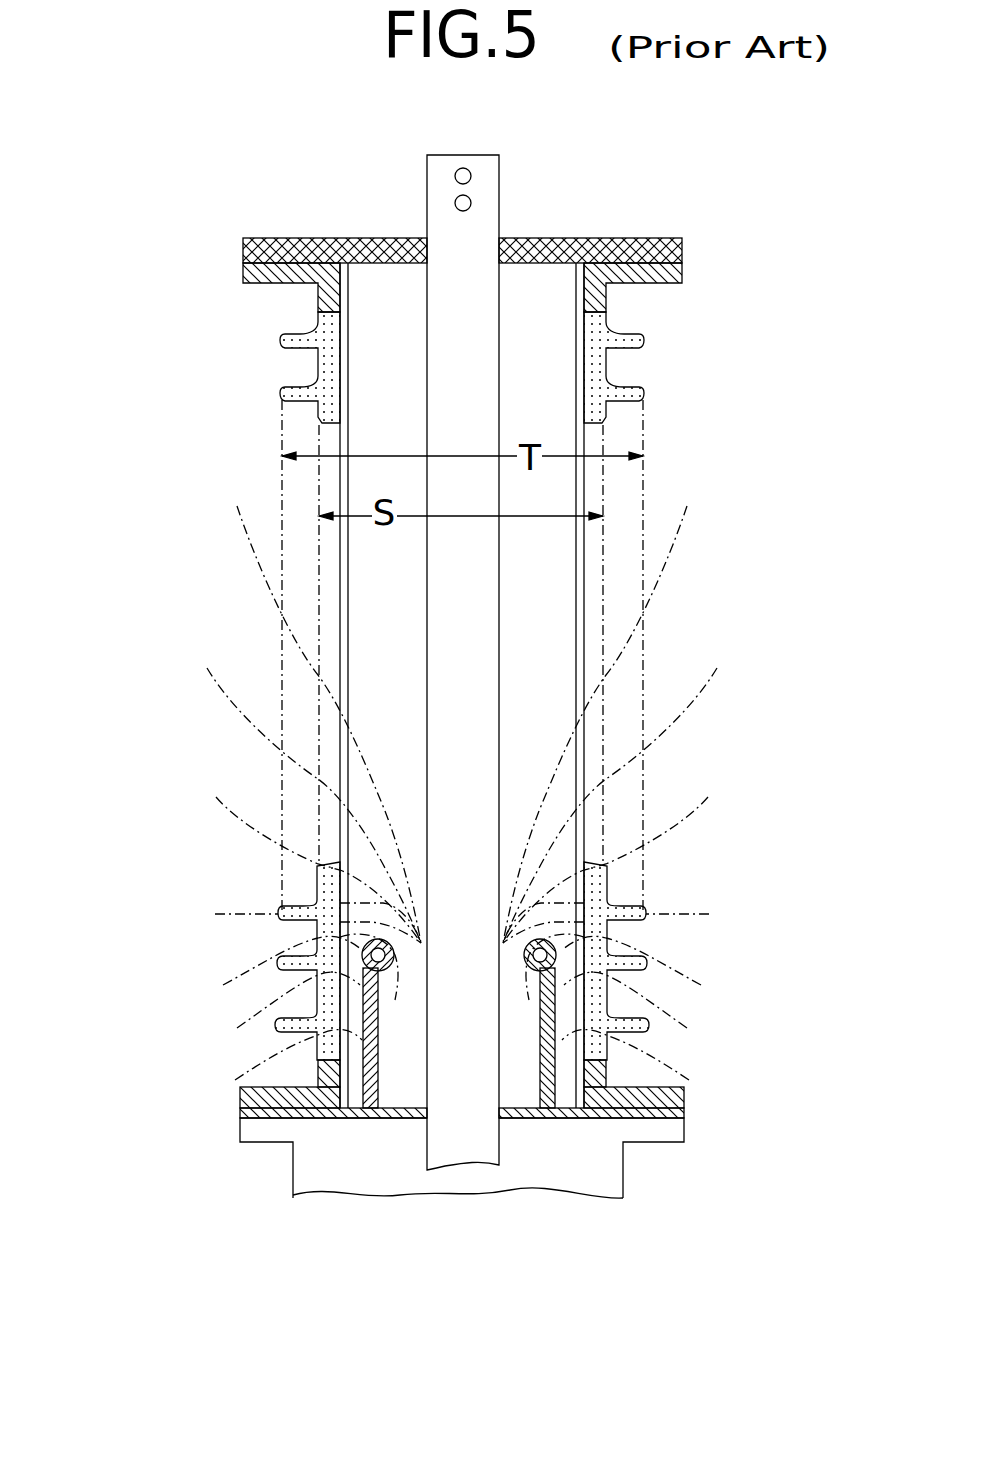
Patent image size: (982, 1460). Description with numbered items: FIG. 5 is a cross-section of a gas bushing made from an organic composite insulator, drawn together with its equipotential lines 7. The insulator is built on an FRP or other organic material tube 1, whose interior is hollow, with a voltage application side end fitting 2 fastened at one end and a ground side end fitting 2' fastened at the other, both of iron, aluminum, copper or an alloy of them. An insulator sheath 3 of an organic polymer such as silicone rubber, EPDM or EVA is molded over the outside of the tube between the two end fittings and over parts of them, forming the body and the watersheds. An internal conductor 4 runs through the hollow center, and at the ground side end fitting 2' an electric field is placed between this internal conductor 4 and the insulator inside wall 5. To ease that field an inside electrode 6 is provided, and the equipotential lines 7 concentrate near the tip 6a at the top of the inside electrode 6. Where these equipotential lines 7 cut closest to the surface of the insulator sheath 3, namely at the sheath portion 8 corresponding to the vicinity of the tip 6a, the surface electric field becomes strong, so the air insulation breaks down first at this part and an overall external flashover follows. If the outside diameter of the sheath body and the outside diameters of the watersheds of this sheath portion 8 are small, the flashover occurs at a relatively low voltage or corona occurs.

The organic material tube 1 is at (572, 303).
The voltage application side end fitting 2 is at (411, 265).
The ground side end fitting 2' is at (401, 1142).
The insulator sheath 3 is at (643, 340).
The internal conductor 4 is at (423, 1142).
The insulator inside wall 5 is at (578, 1057).
The inside electrode 6 is at (326, 1115).
The tip of the top of the inside electrode 6a is at (364, 948).
The equipotential lines 7 is at (690, 710).
The sheath portion 8 is at (745, 870).